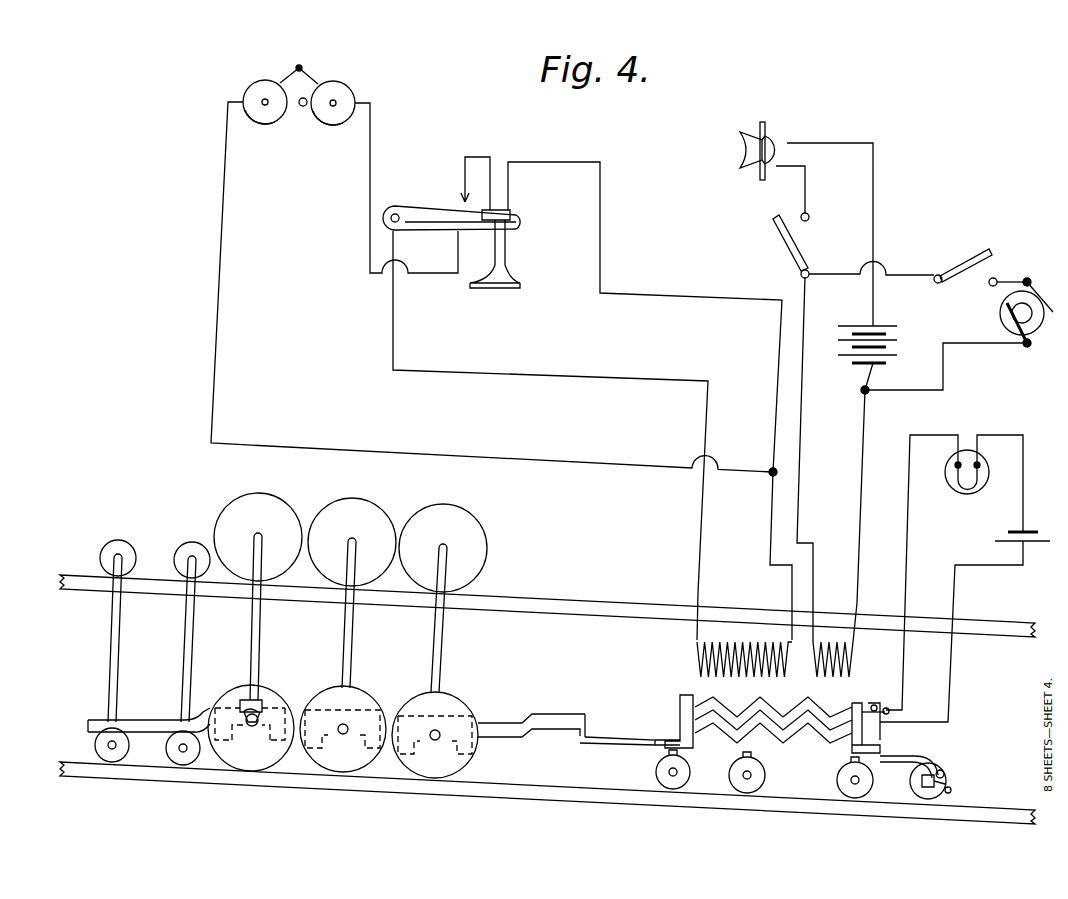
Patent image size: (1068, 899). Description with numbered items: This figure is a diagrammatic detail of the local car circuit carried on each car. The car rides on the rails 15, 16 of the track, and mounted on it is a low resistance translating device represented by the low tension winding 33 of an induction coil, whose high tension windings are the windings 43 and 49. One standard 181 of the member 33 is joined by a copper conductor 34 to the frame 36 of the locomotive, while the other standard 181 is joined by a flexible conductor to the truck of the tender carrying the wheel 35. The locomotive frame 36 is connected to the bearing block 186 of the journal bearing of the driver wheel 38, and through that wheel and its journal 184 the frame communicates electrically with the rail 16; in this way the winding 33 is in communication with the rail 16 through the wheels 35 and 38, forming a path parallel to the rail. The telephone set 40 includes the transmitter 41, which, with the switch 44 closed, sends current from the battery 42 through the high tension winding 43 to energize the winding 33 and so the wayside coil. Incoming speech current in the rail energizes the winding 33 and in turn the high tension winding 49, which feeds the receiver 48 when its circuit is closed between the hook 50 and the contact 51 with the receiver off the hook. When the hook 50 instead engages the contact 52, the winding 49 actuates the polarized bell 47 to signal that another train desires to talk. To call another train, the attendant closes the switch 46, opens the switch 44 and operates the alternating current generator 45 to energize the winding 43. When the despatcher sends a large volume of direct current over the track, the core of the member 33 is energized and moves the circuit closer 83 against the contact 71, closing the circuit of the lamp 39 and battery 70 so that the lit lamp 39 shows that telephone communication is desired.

The upper rail 15 is at (587, 602).
The rail 16 is at (517, 785).
The low tension winding 33 is at (773, 735).
The copper conductor 34 is at (622, 740).
The wheel 35 is at (925, 798).
The frame of the locomotive 36 is at (503, 722).
The wheel 38 is at (252, 762).
The lamp 39 is at (966, 490).
The telephone set 40 is at (650, 401).
The transmitter 41 is at (778, 140).
The battery 42 is at (862, 366).
The high tension winding 43 is at (823, 624).
The switch 44 is at (778, 250).
The alternating current generator 45 is at (1001, 302).
The switch 46 is at (962, 265).
The polarized bell 47 is at (299, 109).
The receiver 48 is at (500, 284).
The high tension winding 49 is at (732, 624).
The hook 50 is at (428, 208).
The contact 51 is at (466, 200).
The contact 52 is at (461, 240).
The battery 70 is at (965, 612).
The contact 71 is at (889, 709).
The circuit closer 83 is at (871, 705).
The standards 181 is at (665, 746).
The journal 184 is at (252, 728).
The bearing block 186 is at (262, 700).